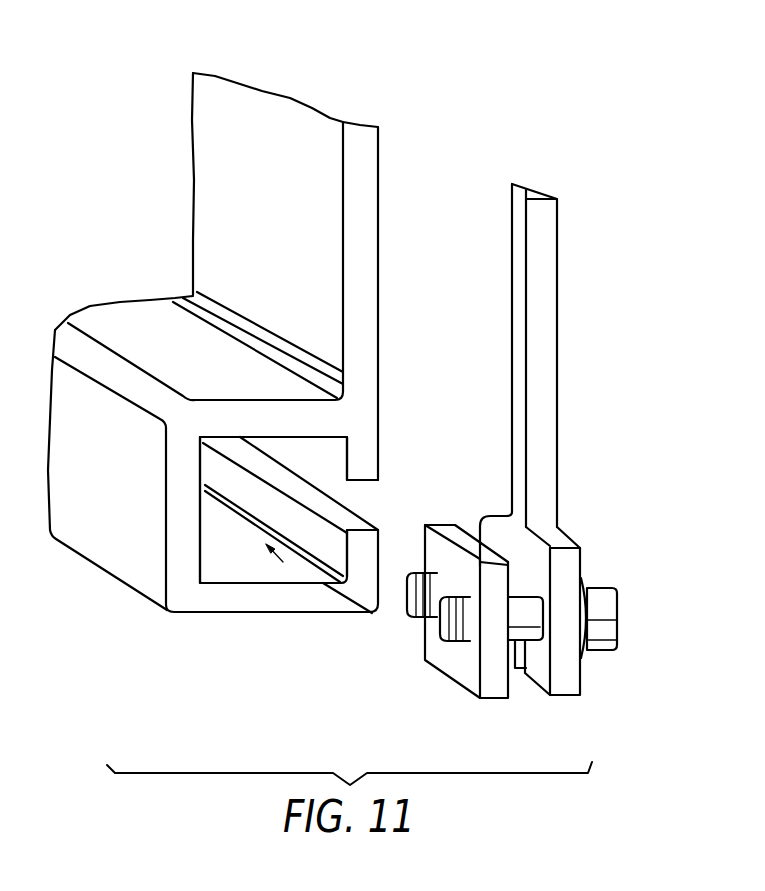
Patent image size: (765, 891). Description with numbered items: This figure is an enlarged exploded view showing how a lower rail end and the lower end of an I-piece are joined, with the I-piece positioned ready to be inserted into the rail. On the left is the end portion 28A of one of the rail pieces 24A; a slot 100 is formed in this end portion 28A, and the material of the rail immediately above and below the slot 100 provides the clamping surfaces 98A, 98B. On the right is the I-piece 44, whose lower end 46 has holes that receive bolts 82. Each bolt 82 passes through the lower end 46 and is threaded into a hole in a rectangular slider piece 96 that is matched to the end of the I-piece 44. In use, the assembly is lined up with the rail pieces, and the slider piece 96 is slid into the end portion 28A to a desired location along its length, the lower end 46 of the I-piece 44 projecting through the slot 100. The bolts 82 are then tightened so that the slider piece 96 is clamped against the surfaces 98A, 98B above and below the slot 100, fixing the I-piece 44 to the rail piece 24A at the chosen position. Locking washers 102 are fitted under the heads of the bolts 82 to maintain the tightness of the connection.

The rail piece 24A is at (383, 187).
The end portion 28A is at (122, 557).
The slot 100 is at (300, 473).
The surface 98A is at (340, 447).
The surface 98B is at (337, 538).
The I-piece 44 is at (560, 296).
The lower end 46 is at (572, 689).
The rectangular slider piece 96 is at (440, 654).
The locking washer 102 is at (584, 580).
The bolt 82 is at (606, 612).